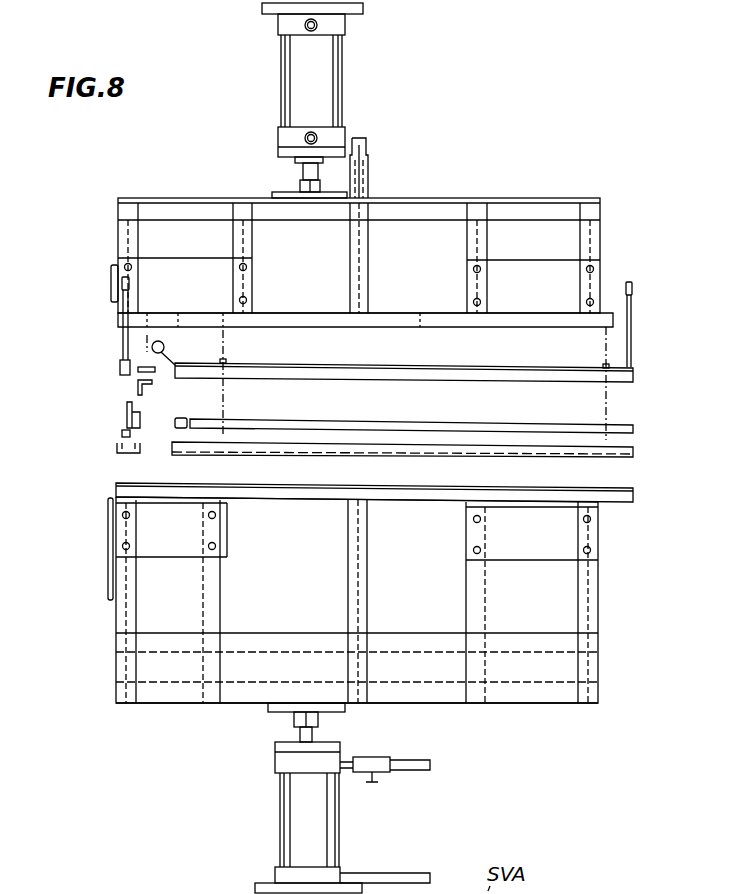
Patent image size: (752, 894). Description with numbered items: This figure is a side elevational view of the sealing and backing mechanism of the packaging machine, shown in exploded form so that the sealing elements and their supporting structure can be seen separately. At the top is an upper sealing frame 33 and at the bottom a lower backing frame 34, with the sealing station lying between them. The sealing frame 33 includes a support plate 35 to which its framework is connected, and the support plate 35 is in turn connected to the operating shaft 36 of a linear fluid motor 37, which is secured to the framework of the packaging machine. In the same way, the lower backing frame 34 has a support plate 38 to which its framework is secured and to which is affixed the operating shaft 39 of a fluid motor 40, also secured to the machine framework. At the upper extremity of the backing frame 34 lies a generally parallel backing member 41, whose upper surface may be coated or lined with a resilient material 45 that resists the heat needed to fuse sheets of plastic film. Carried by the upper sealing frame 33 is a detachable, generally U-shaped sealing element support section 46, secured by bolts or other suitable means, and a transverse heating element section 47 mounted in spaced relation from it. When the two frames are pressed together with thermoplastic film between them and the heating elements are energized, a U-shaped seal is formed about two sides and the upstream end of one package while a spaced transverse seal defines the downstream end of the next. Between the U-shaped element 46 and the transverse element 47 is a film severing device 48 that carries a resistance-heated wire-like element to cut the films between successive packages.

The upper sealing frame 33 is at (118, 210).
The lower backing frame 34 is at (117, 668).
The support plate 35 is at (272, 190).
The operating shaft 36 is at (308, 172).
The linear fluid motor 37 is at (316, 90).
The support plate 38 is at (268, 708).
The operating shaft 39 is at (312, 735).
The fluid motor 40 is at (295, 820).
The backing member 41 is at (315, 493).
The resilient material 45 is at (625, 486).
The U-shaped sealing element support section 46 is at (466, 368).
The transverse heating element section 47 is at (120, 366).
The film severing device 48 is at (128, 414).